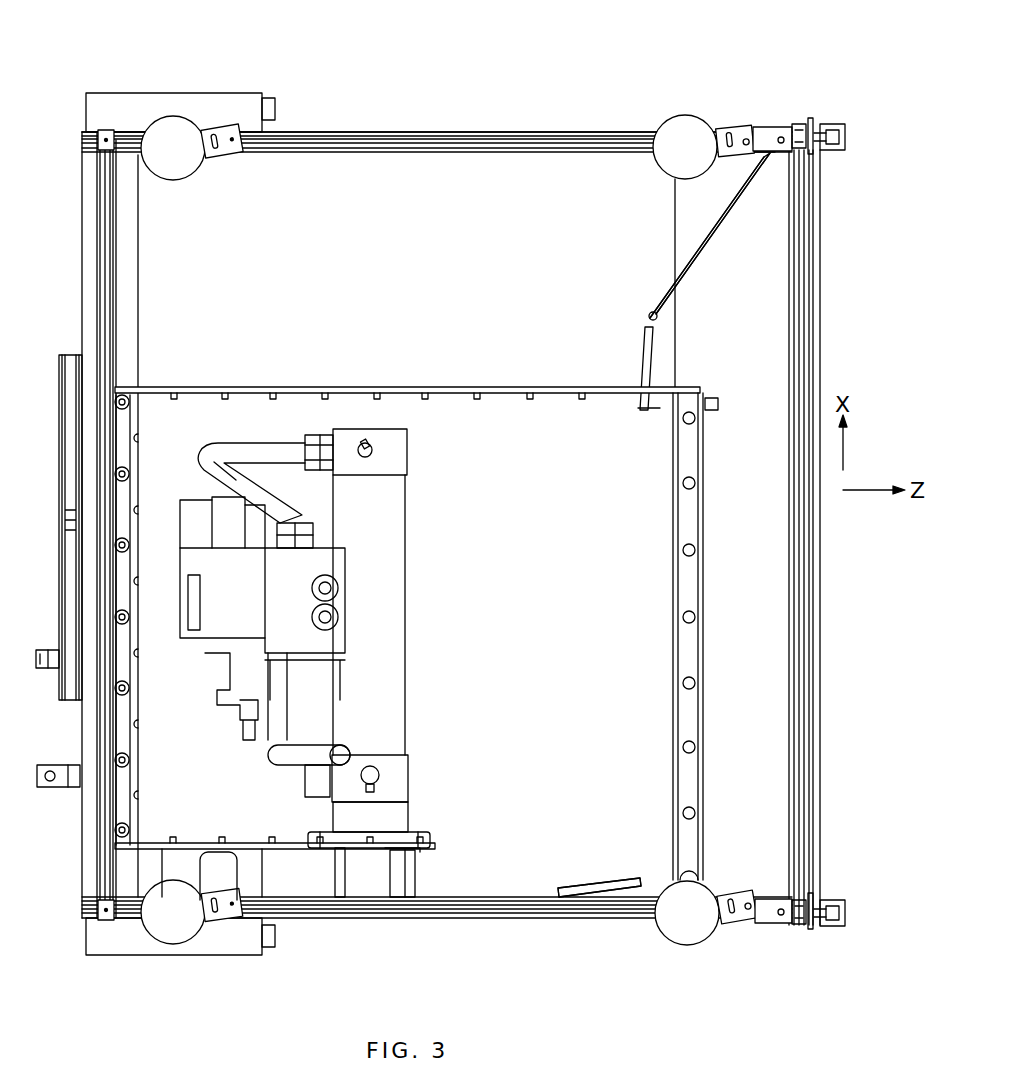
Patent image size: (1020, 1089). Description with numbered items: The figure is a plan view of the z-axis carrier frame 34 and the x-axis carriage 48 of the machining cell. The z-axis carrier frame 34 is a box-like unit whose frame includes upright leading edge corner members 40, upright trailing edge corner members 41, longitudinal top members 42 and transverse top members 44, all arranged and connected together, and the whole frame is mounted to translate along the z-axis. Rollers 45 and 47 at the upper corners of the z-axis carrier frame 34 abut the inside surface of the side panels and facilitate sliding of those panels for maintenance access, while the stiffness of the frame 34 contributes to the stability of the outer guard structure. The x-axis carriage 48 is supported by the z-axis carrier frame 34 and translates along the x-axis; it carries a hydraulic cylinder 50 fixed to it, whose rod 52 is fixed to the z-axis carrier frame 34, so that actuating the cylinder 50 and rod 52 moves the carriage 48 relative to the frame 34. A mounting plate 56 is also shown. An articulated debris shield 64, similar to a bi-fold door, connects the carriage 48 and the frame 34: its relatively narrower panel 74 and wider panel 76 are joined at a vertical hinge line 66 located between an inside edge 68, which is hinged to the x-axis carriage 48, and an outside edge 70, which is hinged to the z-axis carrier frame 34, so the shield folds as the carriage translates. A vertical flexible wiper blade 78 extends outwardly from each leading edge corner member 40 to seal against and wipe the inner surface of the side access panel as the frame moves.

The z-axis carrier frame 34 is at (530, 132).
The upright leading edge corner member 40 is at (838, 125).
The upright trailing edge corner member 41 is at (105, 135).
The longitudinal top member 42 is at (445, 137).
The transverse top member 44 is at (103, 318).
The roller 45 is at (672, 118).
The roller 47 is at (196, 121).
The x-axis carriage 48 is at (505, 400).
The hydraulic cylinder 50 is at (393, 593).
The rod 52 is at (355, 890).
The mounting plate 56 is at (692, 524).
The articulated debris shield 64 is at (690, 275).
The vertical hinge line 66 is at (650, 312).
The inside edge 68 is at (645, 412).
The outside edge 70 is at (768, 160).
The panel 74 is at (643, 360).
The panel 76 is at (700, 215).
The vertical flexible wiper blade 78 is at (810, 120).